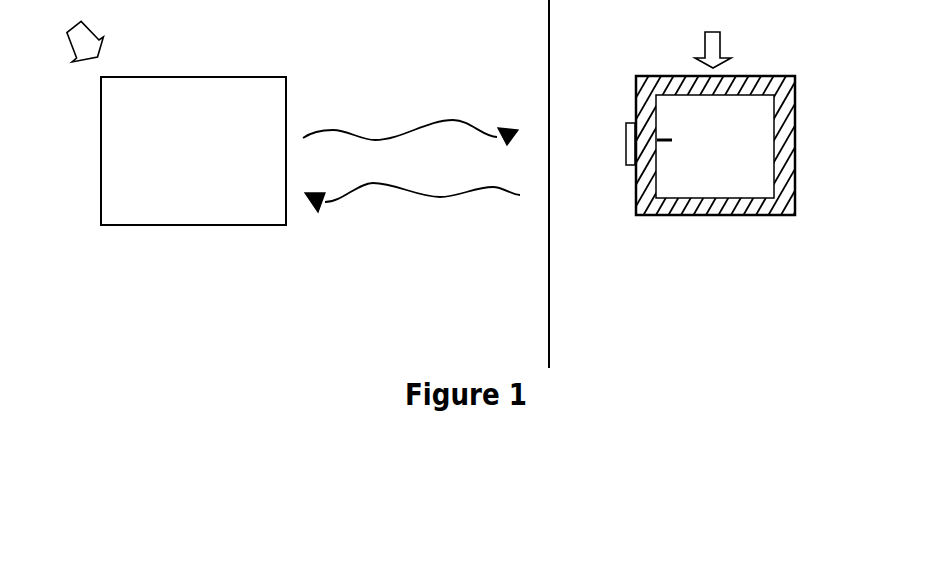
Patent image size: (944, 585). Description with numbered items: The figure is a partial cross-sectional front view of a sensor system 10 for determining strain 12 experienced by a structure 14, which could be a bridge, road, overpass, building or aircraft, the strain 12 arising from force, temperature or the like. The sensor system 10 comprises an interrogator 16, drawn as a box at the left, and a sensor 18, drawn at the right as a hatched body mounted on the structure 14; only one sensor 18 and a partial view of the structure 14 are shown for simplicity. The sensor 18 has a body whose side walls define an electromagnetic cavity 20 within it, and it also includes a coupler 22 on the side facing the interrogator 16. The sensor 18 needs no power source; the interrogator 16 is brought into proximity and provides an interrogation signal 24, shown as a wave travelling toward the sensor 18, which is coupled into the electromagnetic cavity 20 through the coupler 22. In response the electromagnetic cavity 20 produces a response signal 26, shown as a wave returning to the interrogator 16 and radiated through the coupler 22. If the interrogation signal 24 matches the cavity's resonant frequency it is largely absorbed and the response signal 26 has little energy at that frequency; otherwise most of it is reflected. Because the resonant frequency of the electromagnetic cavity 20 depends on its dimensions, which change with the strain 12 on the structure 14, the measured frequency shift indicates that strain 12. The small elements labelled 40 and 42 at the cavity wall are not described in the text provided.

The sensor system 10 is at (75, 35).
The strain 12 is at (713, 36).
The structure 14 is at (715, 145).
The interrogator 16 is at (230, 76).
The sensor 18 is at (795, 143).
The electromagnetic cavity 20 is at (708, 157).
The coupler 22 is at (632, 172).
The interrogation signal 24 is at (410, 120).
The response signal 26 is at (412, 206).
The sensor 40 is at (663, 138).
The tag 42 is at (626, 128).